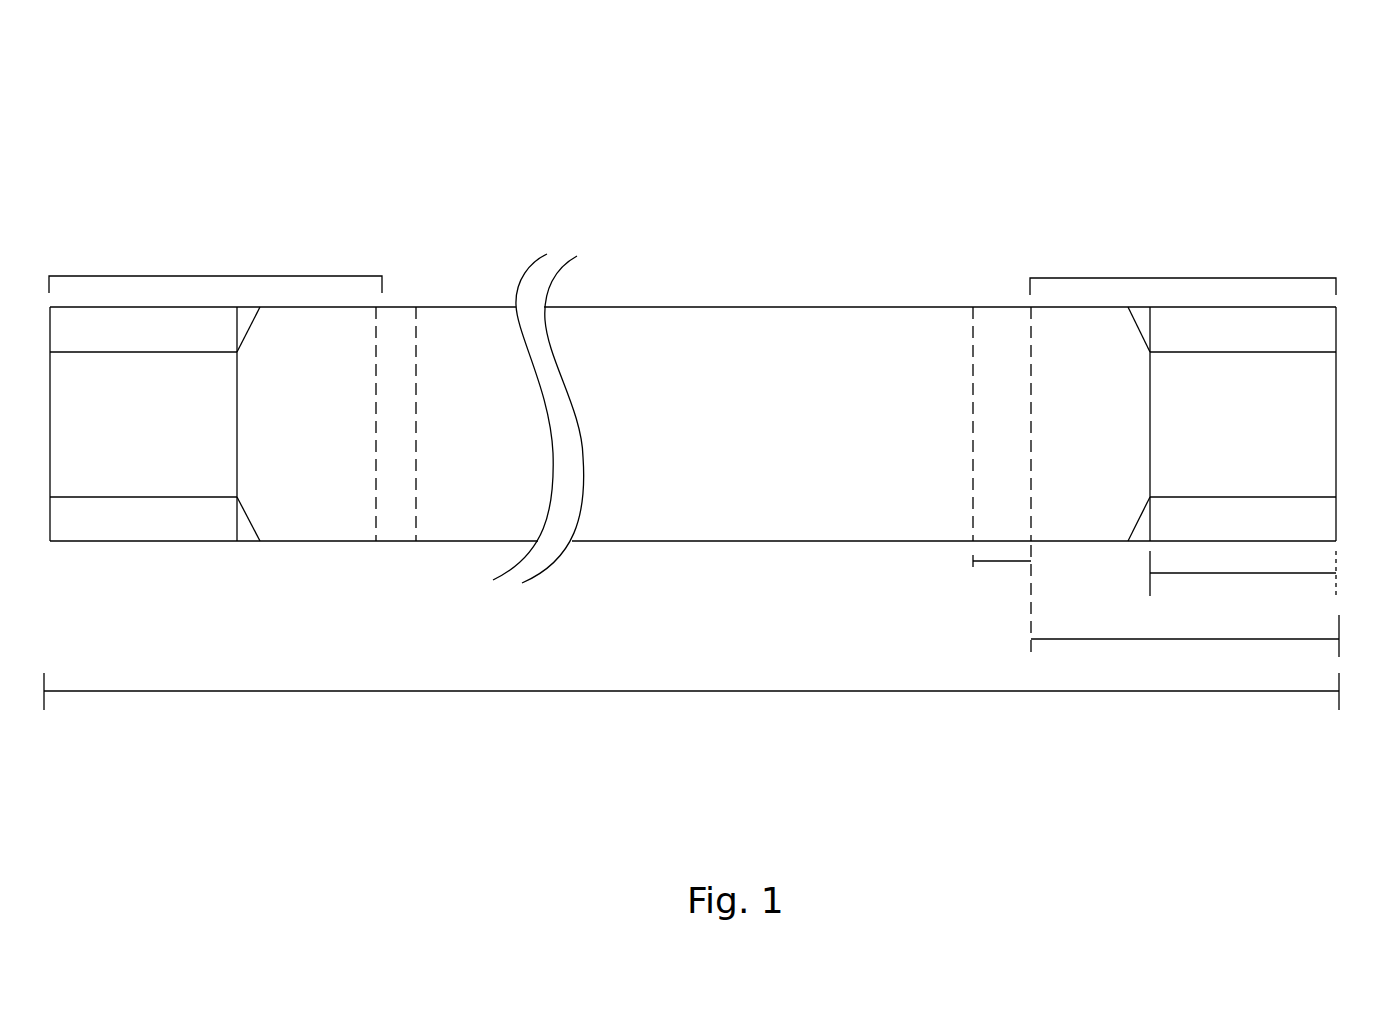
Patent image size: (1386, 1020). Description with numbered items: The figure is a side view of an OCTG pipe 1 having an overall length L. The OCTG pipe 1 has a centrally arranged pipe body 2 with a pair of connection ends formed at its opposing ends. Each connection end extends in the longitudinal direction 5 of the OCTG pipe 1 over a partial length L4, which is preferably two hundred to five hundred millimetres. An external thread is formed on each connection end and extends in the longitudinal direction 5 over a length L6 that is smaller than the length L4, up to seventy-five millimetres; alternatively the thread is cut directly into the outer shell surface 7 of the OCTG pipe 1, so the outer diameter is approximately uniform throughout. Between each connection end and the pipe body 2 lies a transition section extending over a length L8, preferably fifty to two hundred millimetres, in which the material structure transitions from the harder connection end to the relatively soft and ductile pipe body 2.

The OCTG pipe 1 is at (83, 175).
The pipe body 2 is at (685, 350).
The longitudinal direction 5 is at (853, 428).
The outer shell surface 7 is at (838, 308).
The overall length L is at (691, 682).
The length of connection end L4 is at (1185, 632).
The length of external thread L6 is at (1243, 569).
The length of transition section L8 is at (1010, 562).